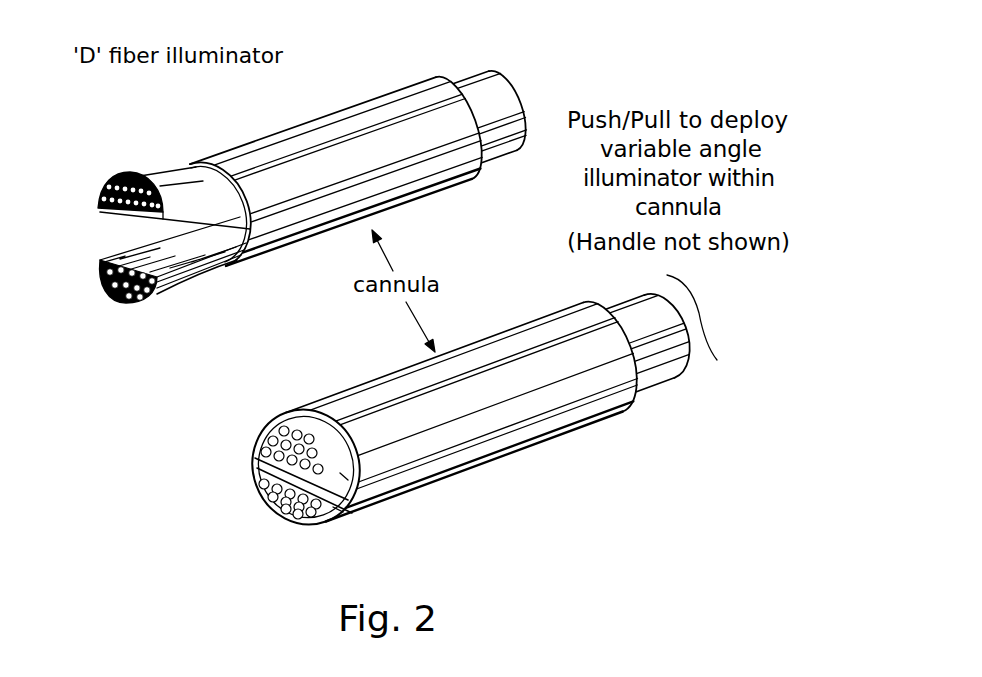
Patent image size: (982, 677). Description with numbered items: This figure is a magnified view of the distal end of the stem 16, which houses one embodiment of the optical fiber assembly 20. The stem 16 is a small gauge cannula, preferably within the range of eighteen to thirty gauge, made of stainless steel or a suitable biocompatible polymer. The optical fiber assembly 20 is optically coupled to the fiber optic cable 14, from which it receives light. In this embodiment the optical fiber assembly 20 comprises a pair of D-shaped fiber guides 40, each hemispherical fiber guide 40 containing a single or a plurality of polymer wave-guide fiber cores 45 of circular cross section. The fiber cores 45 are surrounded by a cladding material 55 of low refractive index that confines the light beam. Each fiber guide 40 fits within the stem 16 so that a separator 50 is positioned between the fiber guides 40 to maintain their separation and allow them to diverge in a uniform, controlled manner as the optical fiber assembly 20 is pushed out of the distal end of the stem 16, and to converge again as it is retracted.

The fiber optic cable 14 is at (543, 97).
The stem 16 is at (323, 117).
The optical fiber assembly 20 is at (477, 72).
The D-shaped fiber guide 40 is at (355, 497).
The polymer wave-guide fiber core 45 is at (270, 507).
The separator 50 is at (202, 258).
The cladding material 55 is at (258, 482).